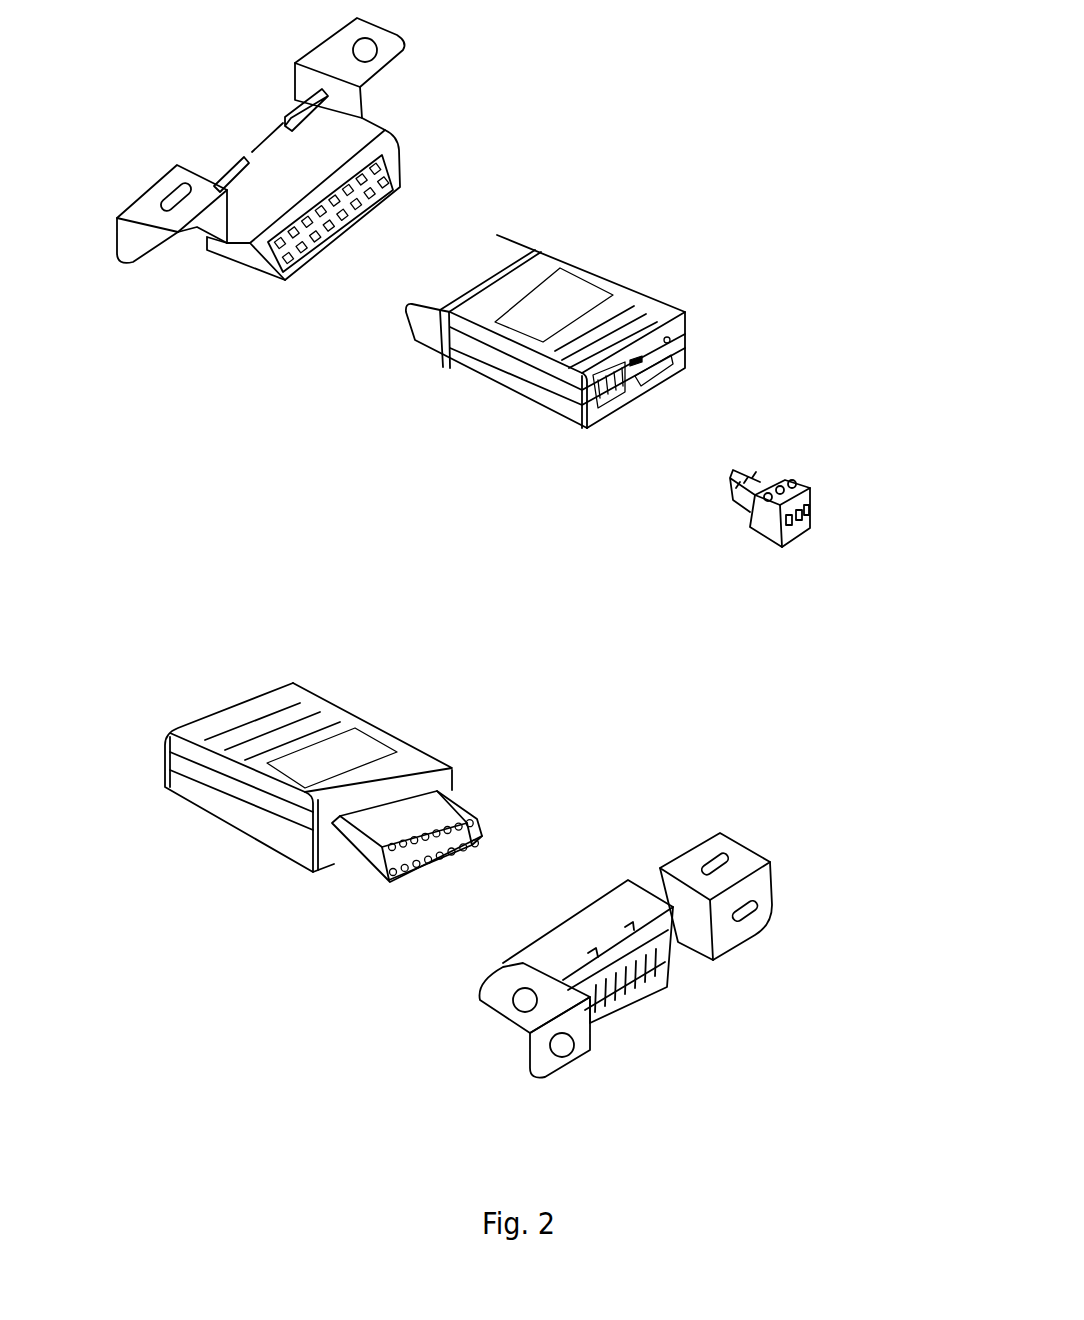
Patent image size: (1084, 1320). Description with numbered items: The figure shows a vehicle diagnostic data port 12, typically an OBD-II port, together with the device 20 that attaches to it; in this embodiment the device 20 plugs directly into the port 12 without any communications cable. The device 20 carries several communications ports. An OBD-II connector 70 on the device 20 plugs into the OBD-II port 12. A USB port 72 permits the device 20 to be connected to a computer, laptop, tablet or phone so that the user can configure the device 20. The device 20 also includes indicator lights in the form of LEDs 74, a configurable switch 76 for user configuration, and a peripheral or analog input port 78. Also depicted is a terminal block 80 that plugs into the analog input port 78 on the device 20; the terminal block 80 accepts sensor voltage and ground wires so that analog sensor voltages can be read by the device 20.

The vehicle data port 12 is at (388, 135).
The device 20 is at (547, 320).
The OBD-II connector 70 is at (530, 560).
The USB port 72 is at (665, 353).
The LEDs 74 is at (672, 338).
The configurable switch 76 is at (655, 337).
The analog input port 78 is at (602, 412).
The terminal block 80 is at (770, 546).